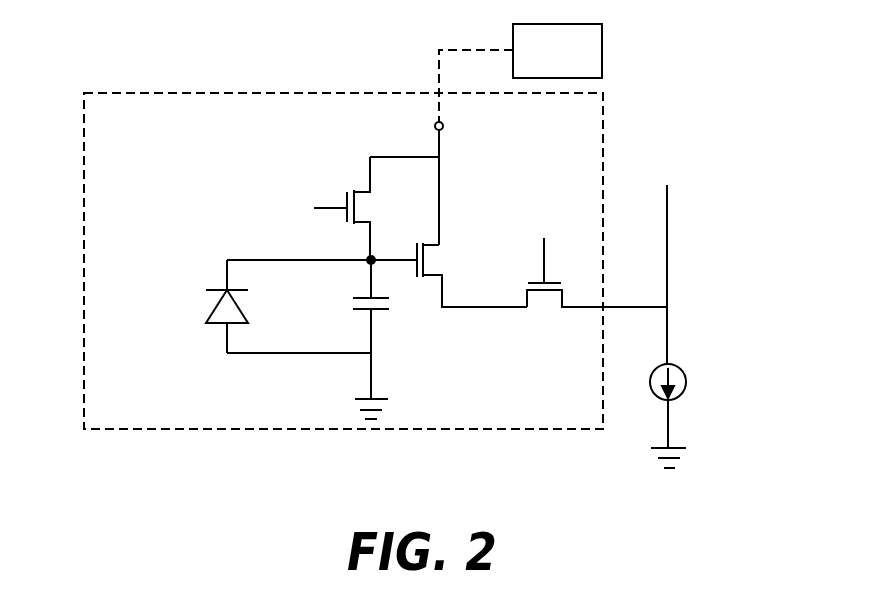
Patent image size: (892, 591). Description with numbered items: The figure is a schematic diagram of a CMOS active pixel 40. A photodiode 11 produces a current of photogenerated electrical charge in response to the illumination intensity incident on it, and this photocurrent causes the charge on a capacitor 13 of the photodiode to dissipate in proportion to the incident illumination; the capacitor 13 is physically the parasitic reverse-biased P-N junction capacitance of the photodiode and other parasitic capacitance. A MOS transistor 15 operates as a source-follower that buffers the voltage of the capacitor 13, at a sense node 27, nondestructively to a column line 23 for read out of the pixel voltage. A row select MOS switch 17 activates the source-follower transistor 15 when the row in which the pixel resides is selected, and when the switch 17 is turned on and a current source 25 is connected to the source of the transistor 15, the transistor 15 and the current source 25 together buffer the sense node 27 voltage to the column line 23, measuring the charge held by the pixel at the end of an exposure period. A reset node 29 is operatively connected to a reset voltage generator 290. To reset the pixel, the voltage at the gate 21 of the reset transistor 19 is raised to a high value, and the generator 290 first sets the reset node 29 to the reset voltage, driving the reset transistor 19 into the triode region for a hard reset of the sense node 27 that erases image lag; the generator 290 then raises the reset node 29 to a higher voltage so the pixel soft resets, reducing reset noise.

The CMOS active pixel 40 is at (242, 88).
The reset voltage generator 290 is at (603, 50).
The reset node 29 is at (444, 129).
The gate of the reset transistor 21 is at (327, 205).
The reset transistor 19 is at (347, 218).
The sense node 27 is at (372, 257).
The photodiode 11 is at (215, 305).
The capacitor 13 is at (362, 296).
The MOS transistor 15 is at (438, 258).
The row select MOS switch 17 is at (546, 305).
The column line 23 is at (670, 236).
The current source 25 is at (686, 380).